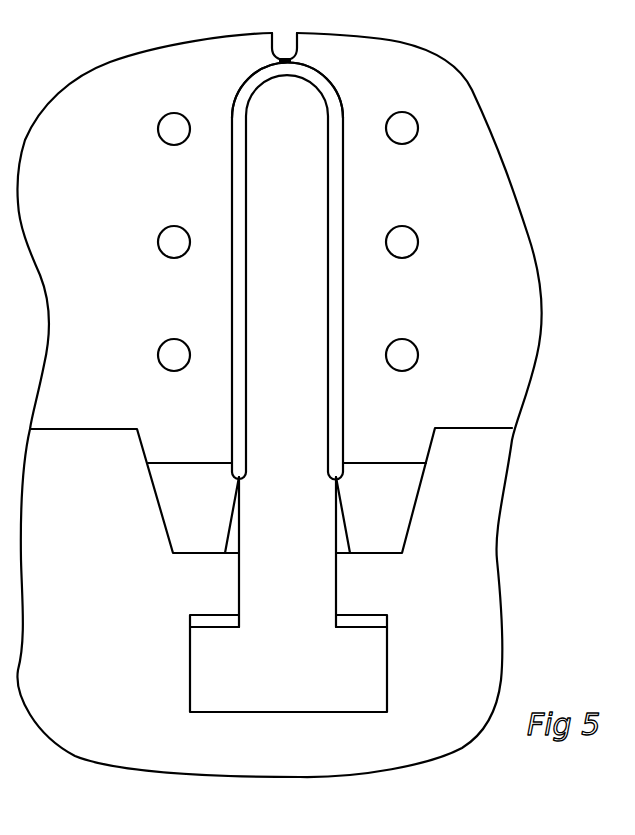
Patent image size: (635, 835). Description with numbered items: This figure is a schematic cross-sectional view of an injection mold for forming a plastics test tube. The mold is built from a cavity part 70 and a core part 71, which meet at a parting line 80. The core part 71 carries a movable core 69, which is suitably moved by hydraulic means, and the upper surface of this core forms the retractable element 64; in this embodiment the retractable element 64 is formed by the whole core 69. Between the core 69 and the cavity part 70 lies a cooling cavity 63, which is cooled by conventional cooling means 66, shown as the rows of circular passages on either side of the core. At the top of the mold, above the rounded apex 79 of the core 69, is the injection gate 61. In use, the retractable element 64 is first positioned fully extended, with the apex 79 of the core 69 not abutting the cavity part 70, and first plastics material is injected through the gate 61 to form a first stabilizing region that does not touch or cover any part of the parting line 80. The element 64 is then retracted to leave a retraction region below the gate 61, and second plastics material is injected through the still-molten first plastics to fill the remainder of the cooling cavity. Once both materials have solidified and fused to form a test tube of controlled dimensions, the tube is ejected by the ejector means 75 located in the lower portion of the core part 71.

The injection gate 61 is at (290, 57).
The cooling cavity 63 is at (332, 183).
The retractable element 64 is at (287, 275).
The cooling means 66 is at (400, 353).
The movable core 69 is at (287, 360).
The cavity part 70 is at (280, 405).
The core part 71 is at (134, 491).
The ejector means 75 is at (287, 508).
The apex 79 is at (310, 85).
The parting line 80 is at (424, 489).